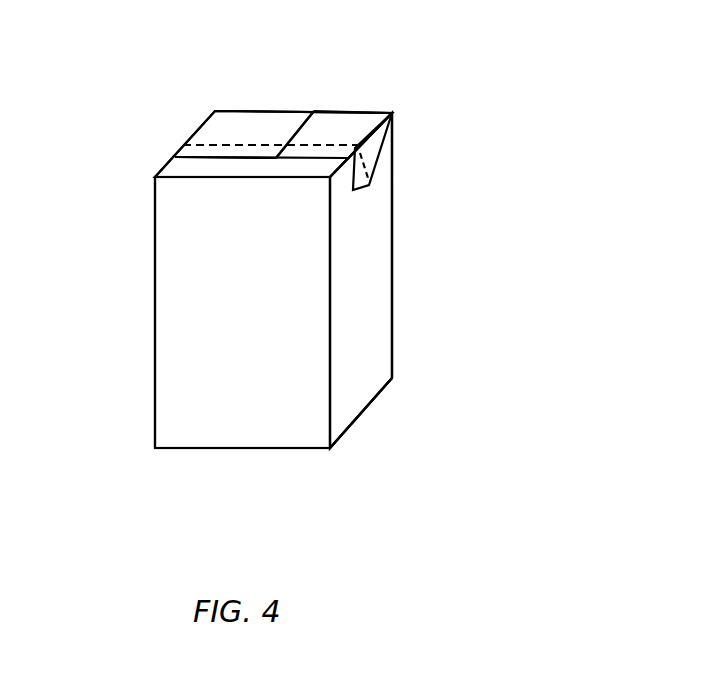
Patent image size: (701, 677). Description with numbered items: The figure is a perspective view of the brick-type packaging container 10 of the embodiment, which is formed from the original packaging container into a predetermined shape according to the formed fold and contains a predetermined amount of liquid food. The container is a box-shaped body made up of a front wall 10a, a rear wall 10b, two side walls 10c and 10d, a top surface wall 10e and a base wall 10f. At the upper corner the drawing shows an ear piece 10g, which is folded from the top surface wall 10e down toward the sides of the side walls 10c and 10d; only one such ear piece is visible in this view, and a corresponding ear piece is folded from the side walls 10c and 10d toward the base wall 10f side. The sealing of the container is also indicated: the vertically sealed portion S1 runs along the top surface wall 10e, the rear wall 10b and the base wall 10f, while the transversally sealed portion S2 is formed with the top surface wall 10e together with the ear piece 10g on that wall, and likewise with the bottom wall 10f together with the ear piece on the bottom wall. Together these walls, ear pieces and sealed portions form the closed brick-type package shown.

The brick-type packaging container 10 is at (418, 165).
The front wall 10a is at (237, 438).
The rear wall 10b is at (392, 248).
The side wall 10c is at (155, 323).
The side wall 10d is at (377, 320).
The top surface wall 10e is at (212, 130).
The base wall 10f is at (363, 413).
The ear piece 10g is at (387, 147).
The vertically sealed portion S1 is at (297, 118).
The transversally sealed portion S2 is at (253, 147).